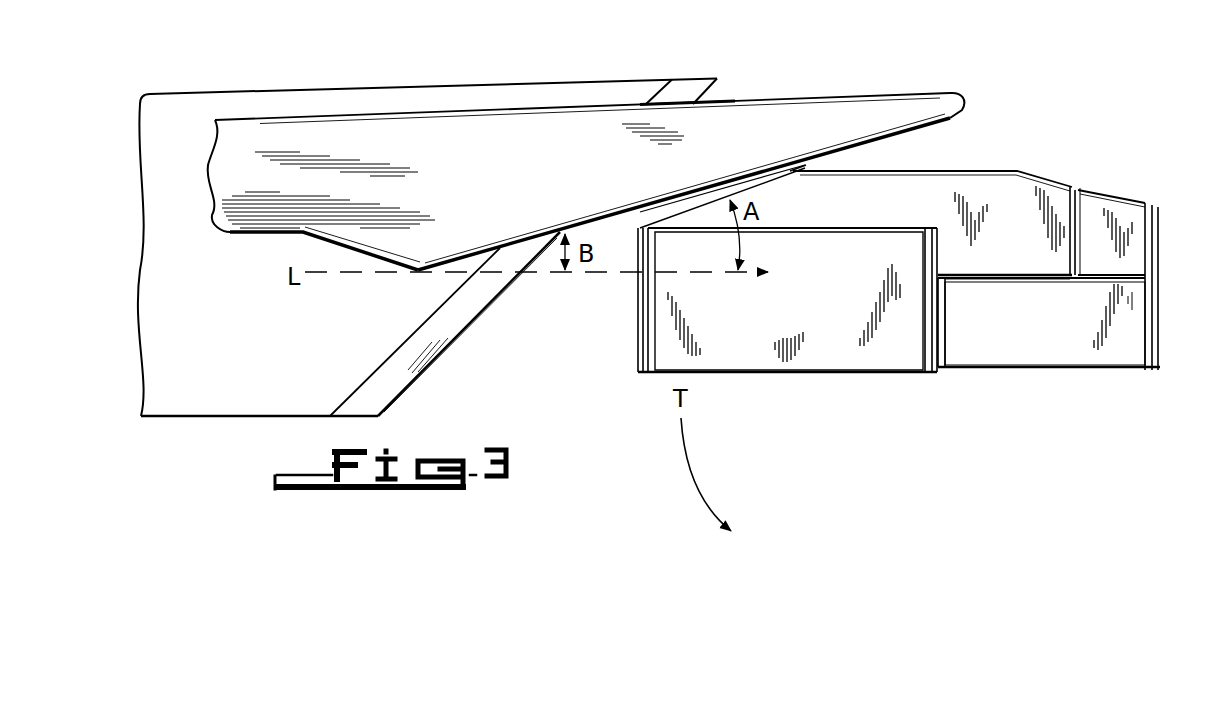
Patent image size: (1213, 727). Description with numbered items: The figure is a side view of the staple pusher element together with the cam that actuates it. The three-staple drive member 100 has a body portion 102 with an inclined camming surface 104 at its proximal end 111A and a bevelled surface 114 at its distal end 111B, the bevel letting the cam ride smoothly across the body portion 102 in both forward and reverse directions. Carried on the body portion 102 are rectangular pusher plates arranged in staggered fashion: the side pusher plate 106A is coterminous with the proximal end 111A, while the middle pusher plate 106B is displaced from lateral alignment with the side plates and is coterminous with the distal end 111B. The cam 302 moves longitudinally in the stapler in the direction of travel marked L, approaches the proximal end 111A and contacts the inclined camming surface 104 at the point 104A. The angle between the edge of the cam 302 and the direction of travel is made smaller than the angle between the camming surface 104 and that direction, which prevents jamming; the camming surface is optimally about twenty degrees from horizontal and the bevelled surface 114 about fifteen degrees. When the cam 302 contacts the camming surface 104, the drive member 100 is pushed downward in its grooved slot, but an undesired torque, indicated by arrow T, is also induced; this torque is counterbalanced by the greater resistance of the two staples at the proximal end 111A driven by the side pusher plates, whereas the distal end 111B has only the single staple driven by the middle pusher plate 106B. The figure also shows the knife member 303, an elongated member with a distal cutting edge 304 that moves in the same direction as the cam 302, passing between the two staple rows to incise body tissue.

The three-staple drive member 100 is at (1132, 151).
The body portion 102 is at (918, 198).
The inclined camming surface 104 is at (760, 188).
The contact point 104A is at (792, 167).
The side pusher plate 106A is at (835, 307).
The middle pusher plate 106B is at (1044, 338).
The proximal end 111A is at (635, 311).
The distal end 111B is at (1192, 325).
The bevelled surface 114 is at (1055, 178).
The cam 302 is at (530, 178).
The knife member 303 is at (360, 87).
The distal cutting edge 304 is at (470, 327).